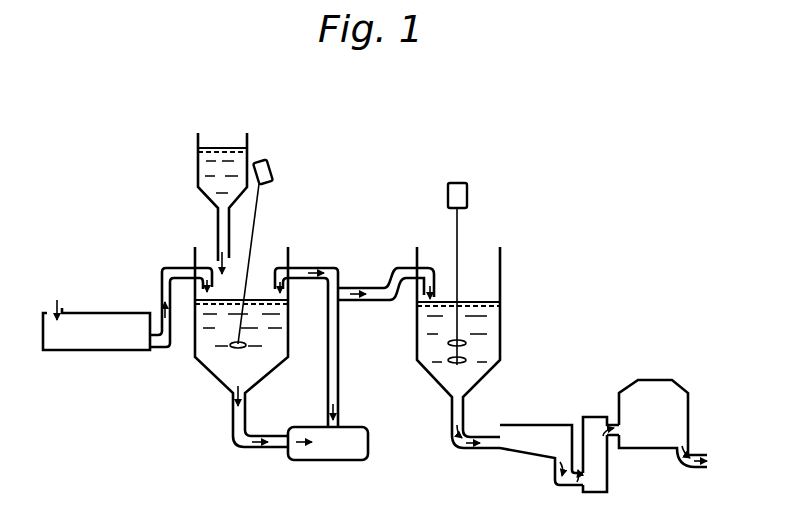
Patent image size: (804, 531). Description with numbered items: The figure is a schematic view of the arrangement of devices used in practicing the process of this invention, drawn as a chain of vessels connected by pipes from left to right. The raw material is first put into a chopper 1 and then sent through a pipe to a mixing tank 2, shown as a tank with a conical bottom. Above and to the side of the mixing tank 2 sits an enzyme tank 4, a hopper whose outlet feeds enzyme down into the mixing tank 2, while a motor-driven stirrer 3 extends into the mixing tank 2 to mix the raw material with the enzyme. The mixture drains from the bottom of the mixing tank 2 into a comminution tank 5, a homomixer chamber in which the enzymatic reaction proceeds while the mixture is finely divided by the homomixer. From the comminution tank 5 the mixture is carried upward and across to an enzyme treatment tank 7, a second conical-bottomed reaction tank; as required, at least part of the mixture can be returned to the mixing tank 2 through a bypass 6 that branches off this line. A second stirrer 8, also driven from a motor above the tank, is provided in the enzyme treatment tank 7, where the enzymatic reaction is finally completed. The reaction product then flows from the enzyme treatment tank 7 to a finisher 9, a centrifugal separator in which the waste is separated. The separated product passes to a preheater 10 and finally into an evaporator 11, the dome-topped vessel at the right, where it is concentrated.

The chopper 1 is at (113, 312).
The mixing tank 2 is at (207, 373).
The stirrer 3 is at (257, 218).
The enzyme tank 4 is at (198, 166).
The comminution tank 5 is at (332, 437).
The bypass 6 is at (311, 268).
The enzyme treatment tank 7 is at (500, 318).
The stirrer 8 is at (460, 226).
The finisher 9 is at (541, 426).
The preheater 10 is at (597, 417).
The evaporator 11 is at (658, 381).